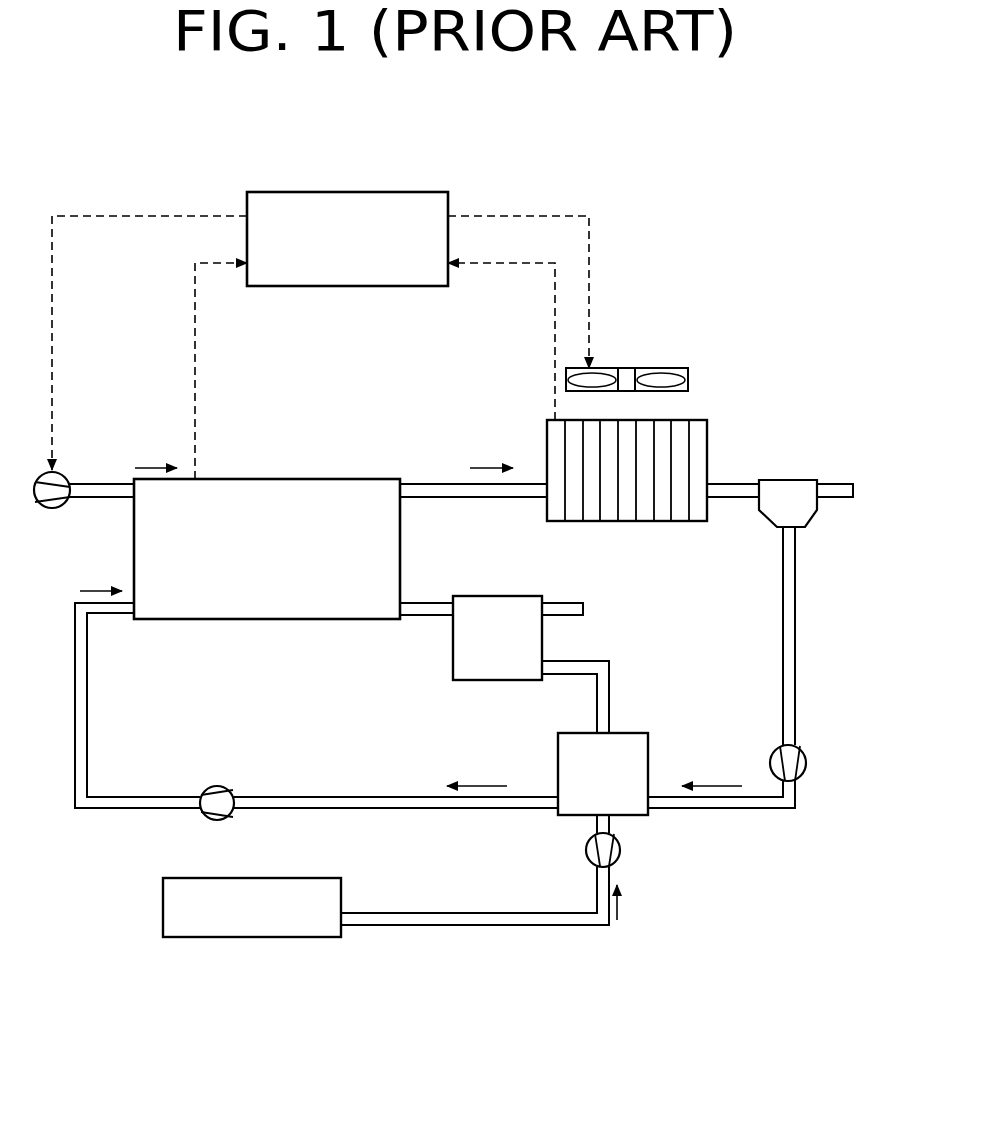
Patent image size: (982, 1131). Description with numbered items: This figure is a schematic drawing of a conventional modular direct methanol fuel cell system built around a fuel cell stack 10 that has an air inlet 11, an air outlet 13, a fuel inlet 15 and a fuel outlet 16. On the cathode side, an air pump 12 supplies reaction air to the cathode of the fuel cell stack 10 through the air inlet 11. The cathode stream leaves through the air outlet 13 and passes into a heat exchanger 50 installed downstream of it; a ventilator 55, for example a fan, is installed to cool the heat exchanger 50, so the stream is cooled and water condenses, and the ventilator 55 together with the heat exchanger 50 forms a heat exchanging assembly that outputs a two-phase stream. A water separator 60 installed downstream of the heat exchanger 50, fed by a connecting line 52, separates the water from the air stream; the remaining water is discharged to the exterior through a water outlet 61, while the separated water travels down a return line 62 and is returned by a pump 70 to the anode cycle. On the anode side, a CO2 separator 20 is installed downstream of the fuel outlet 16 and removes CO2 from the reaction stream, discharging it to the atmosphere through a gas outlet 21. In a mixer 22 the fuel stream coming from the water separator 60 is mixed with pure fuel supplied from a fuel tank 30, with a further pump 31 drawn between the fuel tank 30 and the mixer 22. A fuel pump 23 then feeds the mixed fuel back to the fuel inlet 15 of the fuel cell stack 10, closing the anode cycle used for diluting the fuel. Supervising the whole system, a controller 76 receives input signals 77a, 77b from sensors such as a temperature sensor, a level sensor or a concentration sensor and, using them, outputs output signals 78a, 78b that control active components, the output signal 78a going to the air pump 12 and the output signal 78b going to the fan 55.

The fuel cell stack 10 is at (266, 497).
The air inlet 11 is at (100, 498).
The air pump 12 is at (52, 509).
The air outlet 13 is at (453, 490).
The fuel inlet 15 is at (110, 608).
The fuel outlet 16 is at (424, 608).
The CO2 separator 20 is at (494, 673).
The gas outlet 21 is at (583, 609).
The mixer 22 is at (625, 748).
The fuel pump 23 is at (213, 788).
The fuel tank 30 is at (251, 927).
The fuel pump 31 is at (620, 848).
The heat exchanger 50 is at (696, 427).
The condensate pipe 52 is at (745, 486).
The ventilator 55 is at (627, 378).
The water separator 60 is at (790, 493).
The water outlet 61 is at (837, 490).
The water recovery pipe 62 is at (795, 555).
The pump 70 is at (806, 763).
The controller 76 is at (348, 192).
The input signal 77a is at (195, 302).
The input signal 77b is at (507, 263).
The output signal 78a is at (137, 216).
The output signal 78b is at (517, 216).